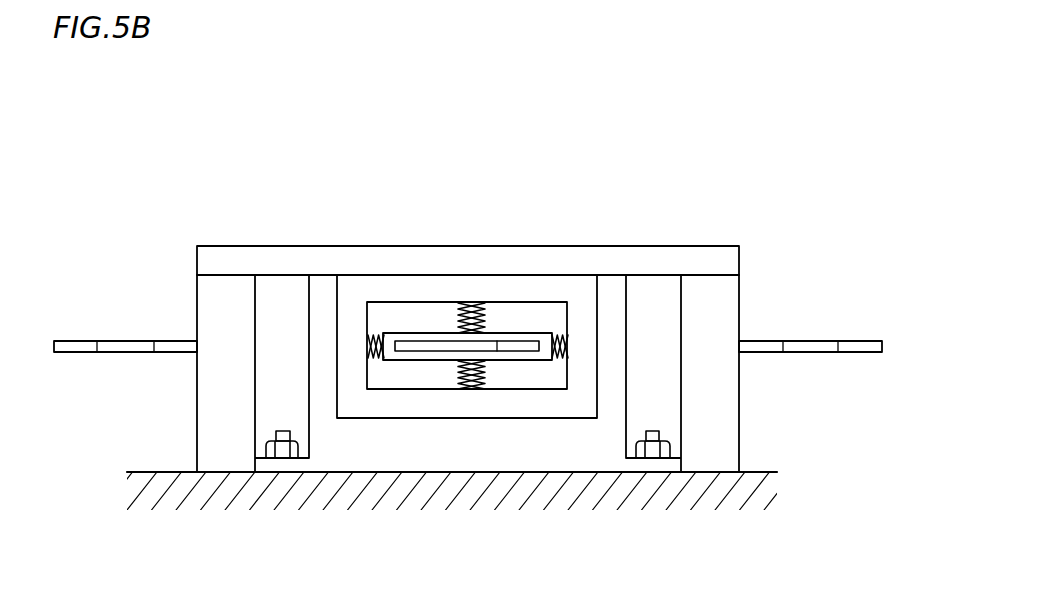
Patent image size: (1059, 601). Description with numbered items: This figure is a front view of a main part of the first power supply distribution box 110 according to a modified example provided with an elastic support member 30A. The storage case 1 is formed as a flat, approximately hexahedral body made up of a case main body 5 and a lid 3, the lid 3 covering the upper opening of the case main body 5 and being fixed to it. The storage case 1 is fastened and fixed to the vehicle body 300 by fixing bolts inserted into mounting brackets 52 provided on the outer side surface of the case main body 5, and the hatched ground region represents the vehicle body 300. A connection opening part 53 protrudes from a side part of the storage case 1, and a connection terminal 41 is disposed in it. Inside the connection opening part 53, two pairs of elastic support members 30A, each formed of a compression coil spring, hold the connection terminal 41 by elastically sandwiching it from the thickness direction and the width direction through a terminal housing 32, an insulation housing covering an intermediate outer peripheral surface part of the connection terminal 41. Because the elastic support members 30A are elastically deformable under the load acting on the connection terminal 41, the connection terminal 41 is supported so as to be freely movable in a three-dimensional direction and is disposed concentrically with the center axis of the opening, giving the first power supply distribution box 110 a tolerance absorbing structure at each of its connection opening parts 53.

The storage case 1 is at (277, 152).
The lid 3 is at (264, 243).
The case main body 5 is at (187, 291).
The elastic support member 30A is at (559, 328).
The terminal housing 32 is at (427, 358).
The connection terminal 41 is at (77, 336).
The mounting bracket 52 is at (652, 462).
The connection opening part 53 is at (395, 272).
The first power supply distribution box 110 is at (653, 205).
The vehicle body 300 is at (152, 471).